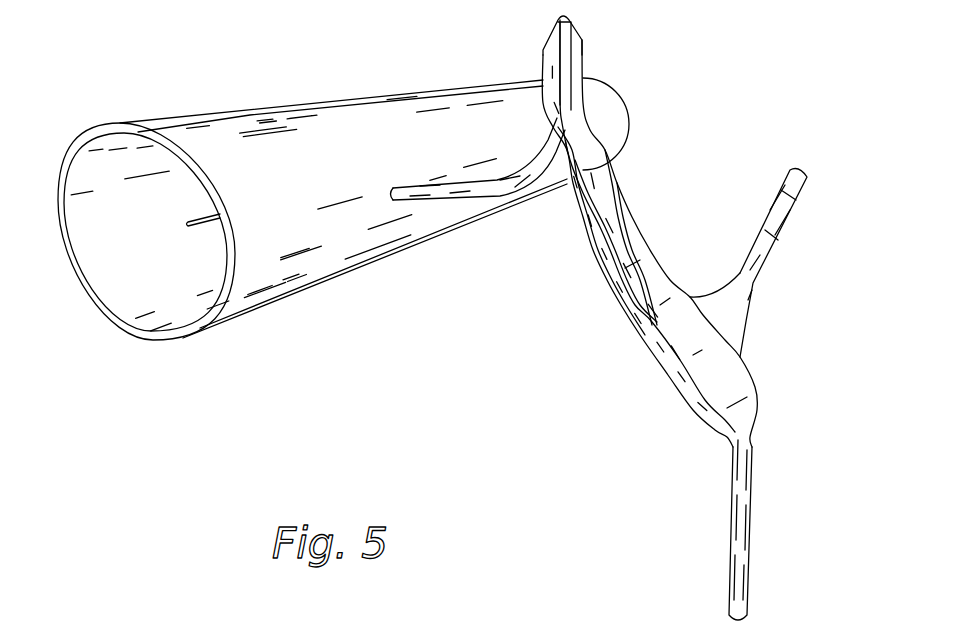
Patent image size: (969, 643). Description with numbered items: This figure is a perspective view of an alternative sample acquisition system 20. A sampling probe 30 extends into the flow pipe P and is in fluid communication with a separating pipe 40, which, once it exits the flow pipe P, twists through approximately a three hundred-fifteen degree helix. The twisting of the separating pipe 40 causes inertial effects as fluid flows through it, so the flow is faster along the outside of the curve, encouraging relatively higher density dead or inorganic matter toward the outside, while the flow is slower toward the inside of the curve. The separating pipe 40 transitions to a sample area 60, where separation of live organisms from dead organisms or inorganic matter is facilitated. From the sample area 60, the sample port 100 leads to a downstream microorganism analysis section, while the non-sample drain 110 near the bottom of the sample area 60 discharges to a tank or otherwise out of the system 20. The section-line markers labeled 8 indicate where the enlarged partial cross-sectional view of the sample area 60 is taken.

The flow pipe P is at (244, 90).
The sample acquisition system 20 is at (536, 404).
The sampling probe 30 is at (196, 232).
The separating pipe 40 is at (604, 46).
The sample area 60 is at (663, 411).
The sample port 100 is at (758, 171).
The non-sample drain 110 is at (766, 548).
The section line for FIG. 8 is at (747, 275).